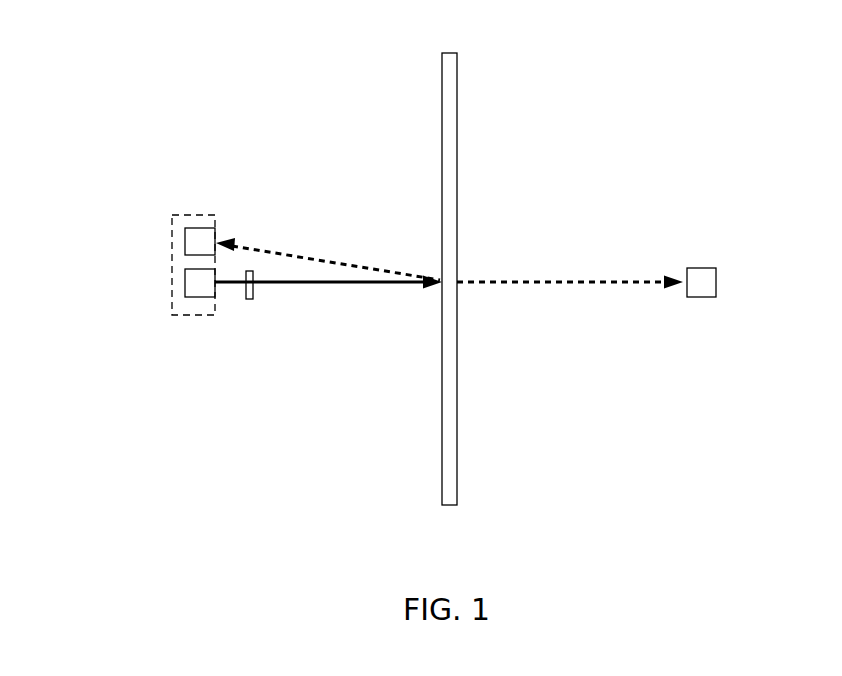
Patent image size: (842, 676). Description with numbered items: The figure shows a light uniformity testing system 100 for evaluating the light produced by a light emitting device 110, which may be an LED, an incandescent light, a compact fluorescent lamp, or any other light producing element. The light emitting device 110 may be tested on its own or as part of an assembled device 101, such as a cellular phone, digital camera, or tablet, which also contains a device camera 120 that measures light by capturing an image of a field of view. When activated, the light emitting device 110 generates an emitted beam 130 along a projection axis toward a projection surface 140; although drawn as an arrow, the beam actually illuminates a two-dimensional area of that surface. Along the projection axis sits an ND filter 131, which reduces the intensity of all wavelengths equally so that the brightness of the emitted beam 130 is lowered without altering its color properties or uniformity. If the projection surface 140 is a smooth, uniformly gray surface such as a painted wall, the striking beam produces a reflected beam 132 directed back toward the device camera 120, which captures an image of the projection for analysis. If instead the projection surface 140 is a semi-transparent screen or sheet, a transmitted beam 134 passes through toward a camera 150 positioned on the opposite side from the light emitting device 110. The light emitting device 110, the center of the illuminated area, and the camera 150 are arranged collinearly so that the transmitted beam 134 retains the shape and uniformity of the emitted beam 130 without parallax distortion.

The light uniformity testing system 100 is at (584, 30).
The device 101 is at (172, 253).
The light emitting device 110 is at (198, 297).
The device camera 120 is at (200, 228).
The emitted beam 130 is at (307, 285).
The ND filter 131 is at (248, 299).
The reflected beam 132 is at (283, 255).
The transmitted beam 134 is at (557, 283).
The projection surface 140 is at (457, 68).
The camera 150 is at (716, 282).